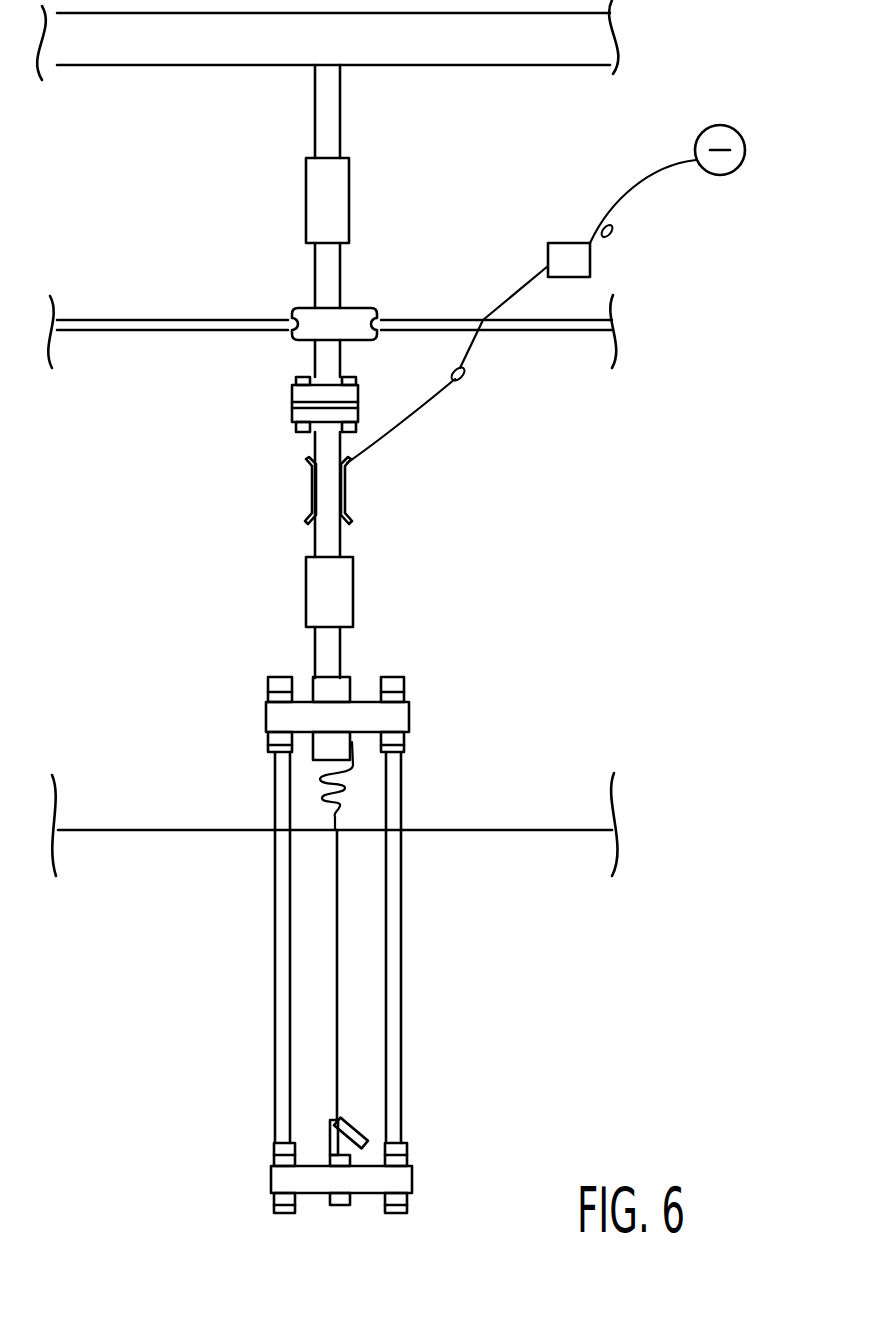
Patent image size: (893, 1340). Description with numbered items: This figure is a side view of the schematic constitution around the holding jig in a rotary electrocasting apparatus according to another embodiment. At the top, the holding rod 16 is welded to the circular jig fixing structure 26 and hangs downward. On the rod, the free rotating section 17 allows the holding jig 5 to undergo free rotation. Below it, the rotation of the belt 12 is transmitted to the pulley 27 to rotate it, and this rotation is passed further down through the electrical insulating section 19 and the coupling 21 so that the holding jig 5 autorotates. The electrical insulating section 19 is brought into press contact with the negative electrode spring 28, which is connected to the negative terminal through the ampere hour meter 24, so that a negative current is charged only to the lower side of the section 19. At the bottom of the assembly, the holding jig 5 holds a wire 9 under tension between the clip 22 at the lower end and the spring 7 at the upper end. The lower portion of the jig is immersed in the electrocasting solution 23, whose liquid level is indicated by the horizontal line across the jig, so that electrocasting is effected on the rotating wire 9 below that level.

The jig fixing structure 26 is at (528, 44).
The holding rod 16 is at (330, 130).
The free rotating section 17 is at (336, 203).
The pulley 27 is at (352, 317).
The belt 12 is at (515, 326).
The electrical insulating section 19 is at (290, 413).
The negative electrode spring 28 is at (345, 480).
The ampere hour meter 24 is at (592, 253).
The coupling 21 is at (345, 583).
The holding jig 5 is at (412, 712).
The spring 7 is at (345, 790).
The electrocasting solution 23 is at (572, 830).
The wire 9 is at (340, 985).
The clip 22 is at (362, 1128).